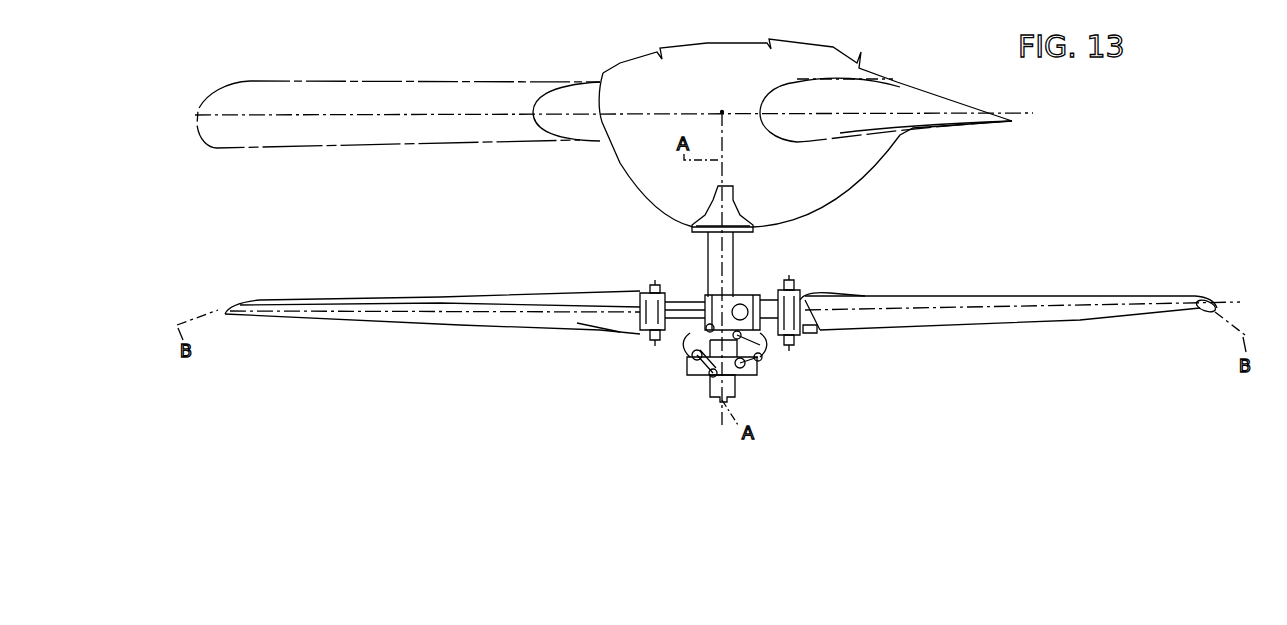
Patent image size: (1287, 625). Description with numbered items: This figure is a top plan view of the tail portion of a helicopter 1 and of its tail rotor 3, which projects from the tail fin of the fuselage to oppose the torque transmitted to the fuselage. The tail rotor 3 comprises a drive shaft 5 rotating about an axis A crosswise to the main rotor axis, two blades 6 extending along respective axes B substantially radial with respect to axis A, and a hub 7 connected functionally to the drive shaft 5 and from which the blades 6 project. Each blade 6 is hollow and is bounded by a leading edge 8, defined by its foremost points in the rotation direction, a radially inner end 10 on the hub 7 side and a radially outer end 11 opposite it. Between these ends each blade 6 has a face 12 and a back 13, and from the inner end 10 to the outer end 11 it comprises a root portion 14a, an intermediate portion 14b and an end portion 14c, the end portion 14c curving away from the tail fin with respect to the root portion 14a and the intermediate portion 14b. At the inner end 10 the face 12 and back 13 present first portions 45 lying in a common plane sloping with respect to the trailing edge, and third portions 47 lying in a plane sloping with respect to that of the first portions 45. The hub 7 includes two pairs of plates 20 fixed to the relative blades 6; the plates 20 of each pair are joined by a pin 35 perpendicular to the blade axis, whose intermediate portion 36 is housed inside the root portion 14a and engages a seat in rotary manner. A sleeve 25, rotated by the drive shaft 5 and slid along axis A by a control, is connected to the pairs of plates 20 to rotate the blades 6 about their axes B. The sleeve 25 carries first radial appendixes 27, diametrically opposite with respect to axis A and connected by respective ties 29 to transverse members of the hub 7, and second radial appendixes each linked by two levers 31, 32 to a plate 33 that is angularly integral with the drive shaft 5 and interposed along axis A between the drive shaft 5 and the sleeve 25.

The helicopter 1 is at (208, 80).
The tail rotor 3 is at (852, 424).
The drive shaft 5 is at (728, 247).
The blade 6 is at (714, 300).
The hub 7 is at (676, 346).
The leading edge 8 is at (352, 295).
The radially inner end 10 is at (657, 290).
The radially outer end 11 is at (215, 298).
The face 12 is at (416, 321).
The back 13 is at (272, 295).
The root portion 14a is at (592, 319).
The intermediate portion 14b is at (427, 297).
The end portion 14c is at (288, 314).
The plate 20 is at (851, 294).
The sleeve 25 is at (716, 399).
The first radial appendix 27 is at (757, 364).
The tie 29 is at (707, 312).
The lever 31 is at (701, 370).
The lever 32 is at (684, 352).
The plate 33 is at (716, 206).
The pin 35 is at (661, 333).
The intermediate portion 36 is at (677, 295).
The first portion 45 is at (650, 297).
The third portion 47 is at (811, 297).